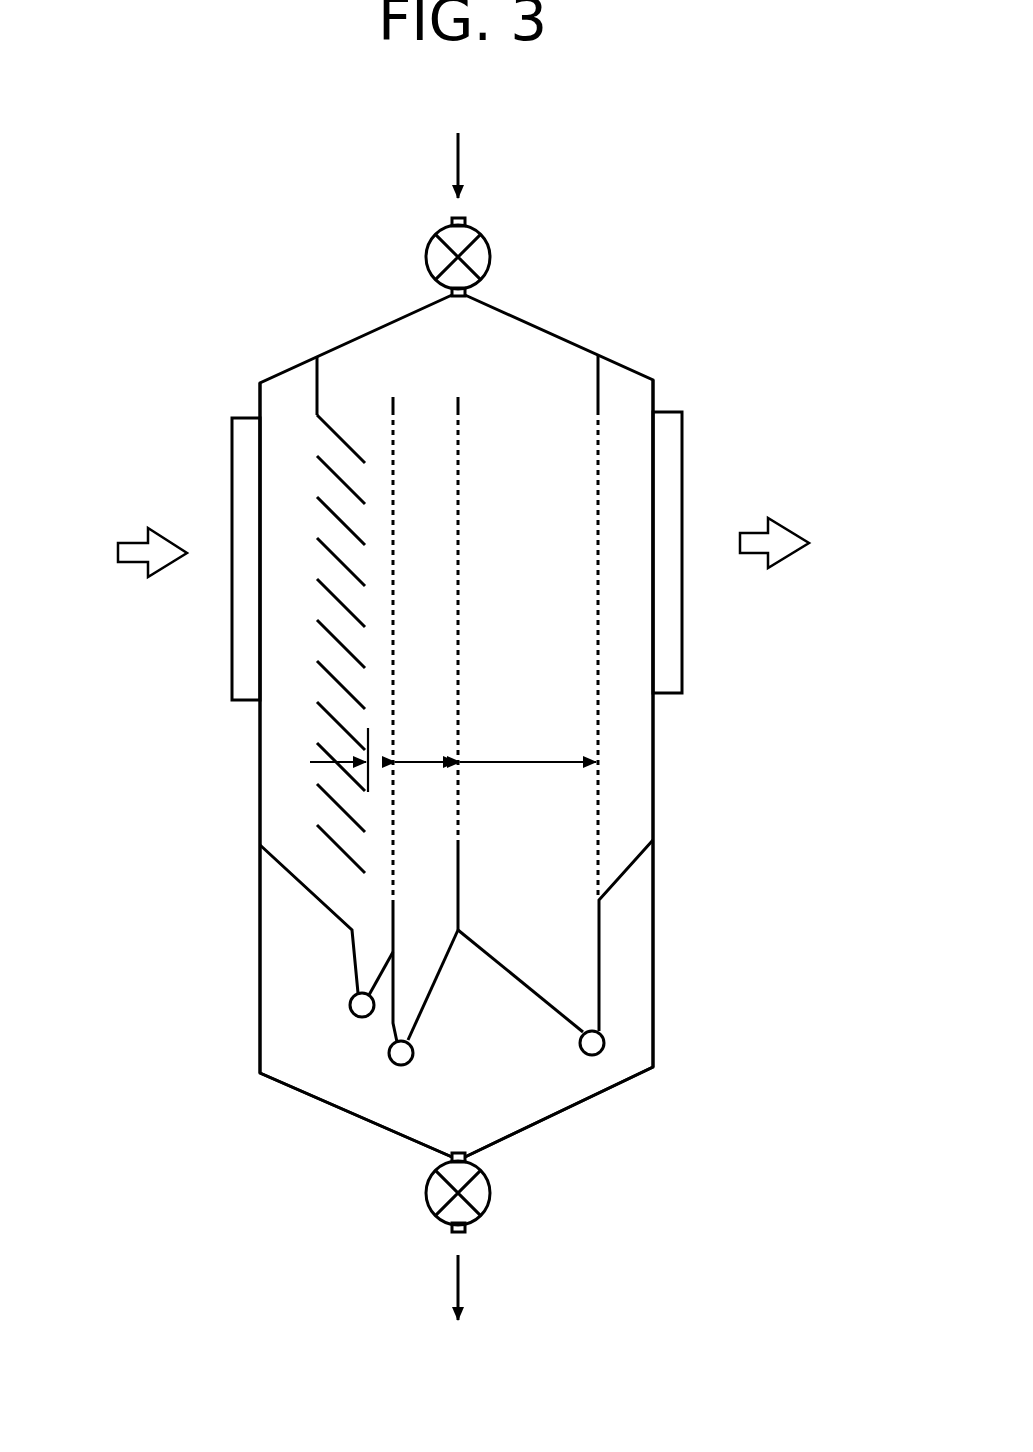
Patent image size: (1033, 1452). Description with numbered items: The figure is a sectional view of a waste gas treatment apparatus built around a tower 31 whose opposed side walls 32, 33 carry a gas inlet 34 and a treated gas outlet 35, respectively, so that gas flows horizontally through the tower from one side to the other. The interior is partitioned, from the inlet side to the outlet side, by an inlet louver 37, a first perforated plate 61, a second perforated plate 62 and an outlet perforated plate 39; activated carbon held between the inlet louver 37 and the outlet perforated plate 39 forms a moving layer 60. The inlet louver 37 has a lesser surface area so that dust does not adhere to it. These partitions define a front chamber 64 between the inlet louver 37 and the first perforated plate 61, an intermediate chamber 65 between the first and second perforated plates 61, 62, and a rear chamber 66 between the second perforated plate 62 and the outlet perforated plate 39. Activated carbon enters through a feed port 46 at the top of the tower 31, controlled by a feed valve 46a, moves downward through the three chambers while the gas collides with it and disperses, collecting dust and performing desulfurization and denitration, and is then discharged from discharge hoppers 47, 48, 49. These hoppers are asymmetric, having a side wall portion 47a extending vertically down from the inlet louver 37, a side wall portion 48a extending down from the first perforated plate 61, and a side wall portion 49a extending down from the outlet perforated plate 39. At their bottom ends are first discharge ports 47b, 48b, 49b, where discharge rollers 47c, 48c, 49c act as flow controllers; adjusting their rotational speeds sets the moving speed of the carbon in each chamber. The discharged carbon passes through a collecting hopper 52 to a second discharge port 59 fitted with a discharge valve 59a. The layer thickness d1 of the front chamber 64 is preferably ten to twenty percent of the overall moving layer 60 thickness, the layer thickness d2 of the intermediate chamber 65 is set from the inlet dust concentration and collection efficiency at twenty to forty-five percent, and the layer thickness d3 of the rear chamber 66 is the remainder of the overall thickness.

The tower 31 is at (556, 318).
The side wall 32 is at (260, 760).
The side wall 33 is at (655, 758).
The gas inlet 34 is at (232, 442).
The treated gas outlet 35 is at (683, 443).
The inlet louver 37 is at (328, 675).
The outlet perforated plate 39 is at (598, 637).
The feed port 46 is at (521, 214).
The feed valve 46a is at (492, 244).
The discharge hopper 47 is at (257, 949).
The side wall portion 47a is at (362, 967).
The first discharge port 47b is at (352, 991).
The discharge roller 47c is at (350, 1007).
The discharge hopper 48 is at (467, 1004).
The side wall portion 48a is at (393, 1023).
The first discharge port 48b is at (389, 1053).
The discharge roller 48c is at (398, 1066).
The discharge hopper 49 is at (637, 988).
The side wall portion 49a is at (600, 938).
The first discharge port 49b is at (587, 1012).
The discharge roller 49c is at (602, 1053).
The collecting hopper 52 is at (510, 1085).
The second discharge port 59 is at (471, 1236).
The discharge valve 59a is at (427, 1195).
The moving layer 60 is at (296, 542).
The first perforated plate 61 is at (392, 432).
The second perforated plate 62 is at (460, 410).
The front chamber 64 is at (380, 585).
The intermediate chamber 65 is at (445, 493).
The rear chamber 66 is at (550, 493).
The layer thickness d1 is at (380, 760).
The layer thickness d2 is at (425, 739).
The layer thickness d3 is at (528, 739).